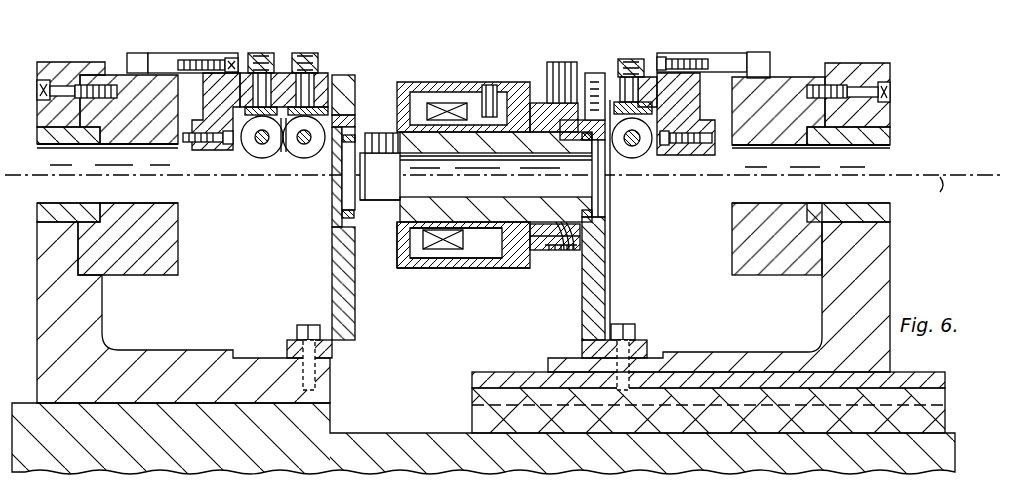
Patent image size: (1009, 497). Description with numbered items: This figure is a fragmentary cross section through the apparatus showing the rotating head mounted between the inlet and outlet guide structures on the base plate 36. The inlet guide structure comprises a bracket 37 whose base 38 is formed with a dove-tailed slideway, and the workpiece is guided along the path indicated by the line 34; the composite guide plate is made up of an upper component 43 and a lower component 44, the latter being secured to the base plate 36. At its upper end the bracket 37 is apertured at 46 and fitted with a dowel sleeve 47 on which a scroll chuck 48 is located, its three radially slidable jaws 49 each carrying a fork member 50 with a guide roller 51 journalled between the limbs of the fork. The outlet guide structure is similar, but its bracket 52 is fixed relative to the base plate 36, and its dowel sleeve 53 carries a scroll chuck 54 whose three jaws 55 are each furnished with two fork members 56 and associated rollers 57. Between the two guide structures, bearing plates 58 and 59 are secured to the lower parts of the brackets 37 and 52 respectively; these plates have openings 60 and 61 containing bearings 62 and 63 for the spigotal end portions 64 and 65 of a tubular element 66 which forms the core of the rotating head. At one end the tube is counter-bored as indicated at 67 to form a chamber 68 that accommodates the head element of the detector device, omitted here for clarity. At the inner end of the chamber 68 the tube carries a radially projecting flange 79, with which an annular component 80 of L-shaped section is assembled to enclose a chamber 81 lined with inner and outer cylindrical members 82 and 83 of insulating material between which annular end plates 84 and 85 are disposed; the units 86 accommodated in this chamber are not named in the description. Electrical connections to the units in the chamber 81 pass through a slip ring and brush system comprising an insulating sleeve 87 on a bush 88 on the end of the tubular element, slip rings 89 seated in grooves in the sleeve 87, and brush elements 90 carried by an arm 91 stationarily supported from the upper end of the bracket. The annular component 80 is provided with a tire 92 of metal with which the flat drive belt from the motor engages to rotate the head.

The guide path line 34 is at (479, 191).
The base plate 36 is at (25, 403).
The bracket 37 is at (890, 265).
The base 38 is at (750, 337).
The upper component 43 is at (945, 380).
The lower component 44 is at (945, 408).
The aperture 46 is at (890, 178).
The dowel sleeve 47 is at (890, 135).
The scroll chuck 48 is at (778, 79).
The jaws 49 is at (700, 48).
The fork member 50 is at (650, 145).
The guide roller 51 is at (627, 150).
The bracket 52 is at (37, 268).
The dowel sleeve 53 is at (37, 137).
The scroll chuck 54 is at (115, 68).
The jaws 55 is at (205, 48).
The fork members 56 is at (284, 154).
The rollers 57 is at (252, 146).
The bearing plate 58 is at (598, 270).
The bearing plate 59 is at (332, 257).
The opening 60 is at (603, 195).
The opening 61 is at (340, 188).
The bearing 62 is at (594, 220).
The bearing 63 is at (343, 224).
The spigotal end portion 64 is at (596, 207).
The spigotal end portion 65 is at (342, 211).
The tubular element 66 is at (400, 258).
The counter-bore 67 is at (381, 200).
The chamber 68 is at (380, 166).
The flange 79 is at (401, 270).
The annular component 80 is at (475, 270).
The chamber 81 is at (497, 241).
The inner cylindrical member 82 is at (486, 207).
The outer cylindrical member 83 is at (441, 268).
The annular end plate 84 is at (411, 267).
The annular end plate 85 is at (503, 262).
The coil 86 is at (427, 110).
The sleeve 87 is at (540, 105).
The bush 88 is at (532, 250).
The slip rings 89 is at (565, 262).
The brush elements 90 is at (552, 90).
The arm 91 is at (558, 62).
The tire 92 is at (452, 80).